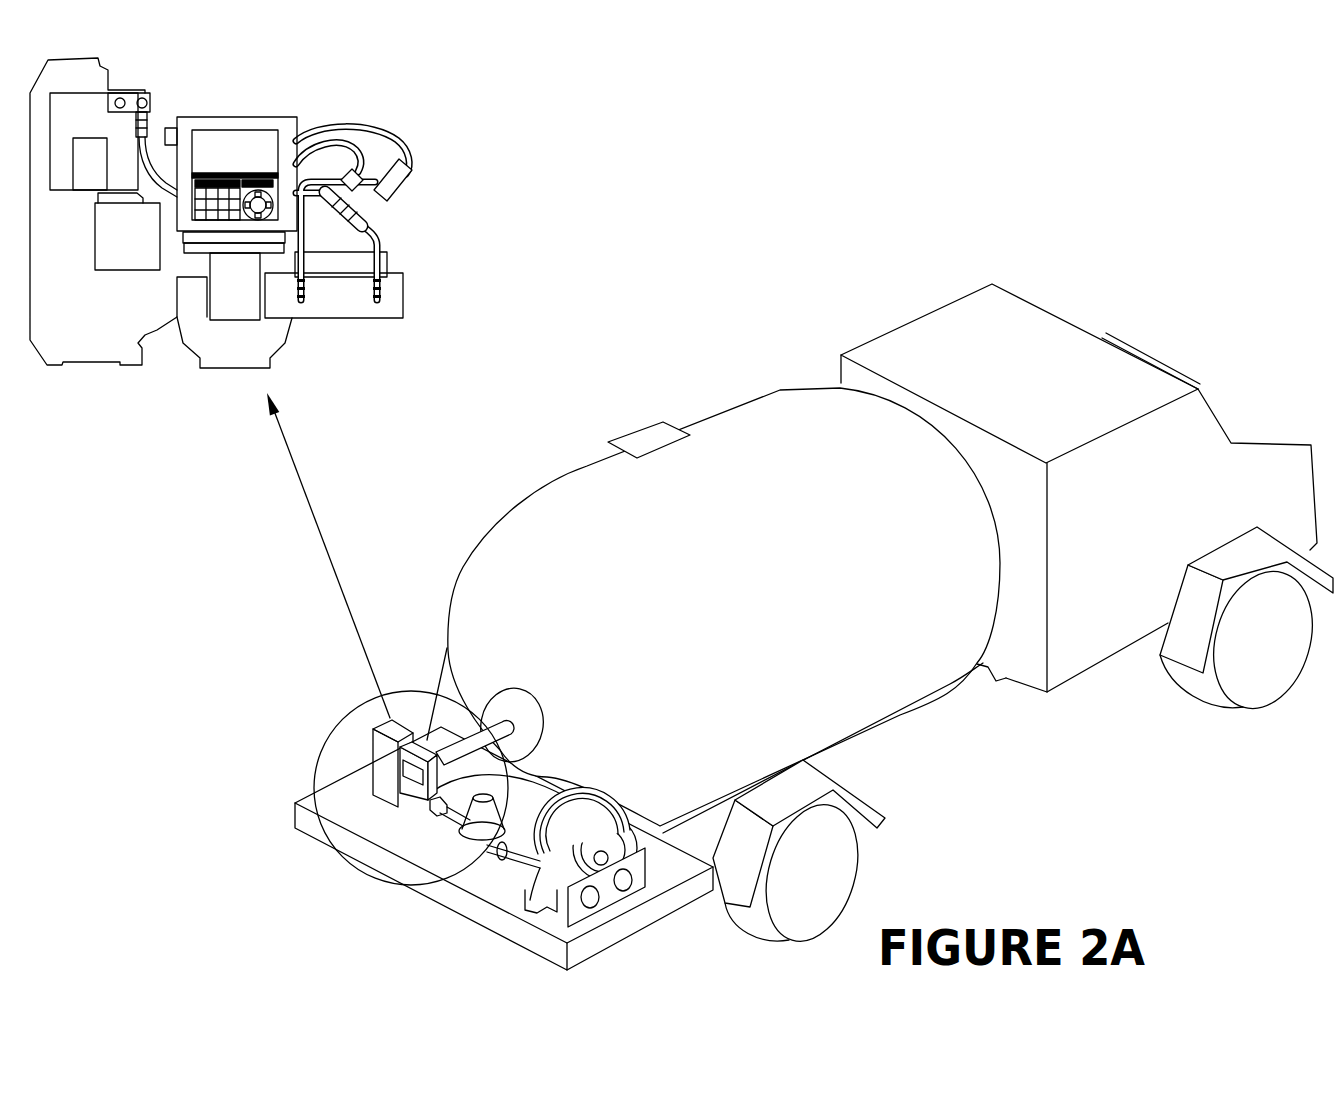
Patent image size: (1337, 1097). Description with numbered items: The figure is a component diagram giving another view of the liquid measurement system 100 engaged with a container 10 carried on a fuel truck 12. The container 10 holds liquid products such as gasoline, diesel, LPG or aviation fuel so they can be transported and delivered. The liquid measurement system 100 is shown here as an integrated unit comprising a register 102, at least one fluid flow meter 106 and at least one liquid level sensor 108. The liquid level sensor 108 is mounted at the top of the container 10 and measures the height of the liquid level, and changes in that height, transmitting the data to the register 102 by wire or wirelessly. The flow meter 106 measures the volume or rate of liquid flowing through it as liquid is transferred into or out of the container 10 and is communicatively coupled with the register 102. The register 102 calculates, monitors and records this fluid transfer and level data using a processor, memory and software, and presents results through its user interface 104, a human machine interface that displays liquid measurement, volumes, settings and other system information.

The container 10 is at (749, 632).
The fuel truck 12 is at (1134, 547).
The liquid measurement system 100 is at (814, 586).
The register 102 is at (256, 146).
The user interface 104 is at (238, 136).
The fluid flow meter 106 is at (221, 388).
The liquid level sensor 108 is at (657, 452).